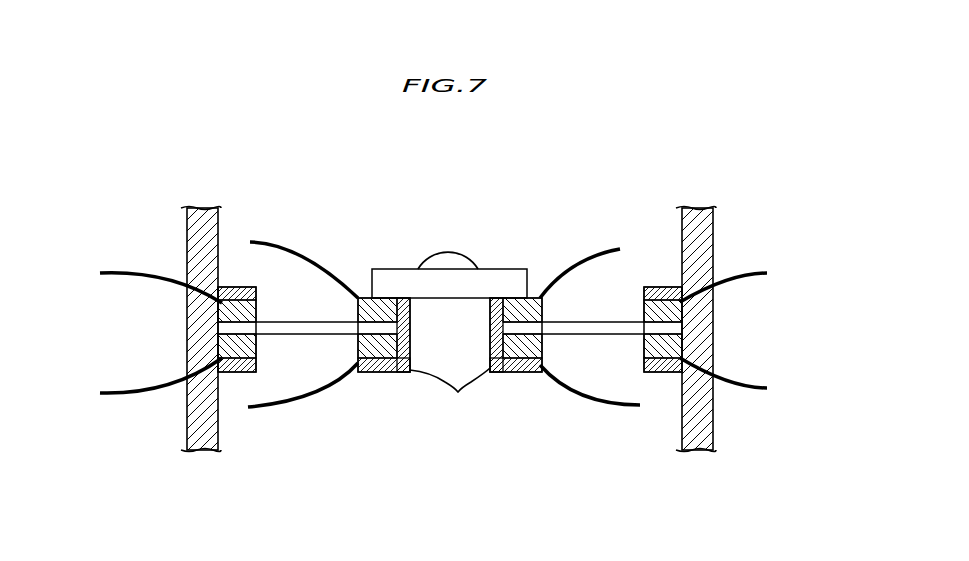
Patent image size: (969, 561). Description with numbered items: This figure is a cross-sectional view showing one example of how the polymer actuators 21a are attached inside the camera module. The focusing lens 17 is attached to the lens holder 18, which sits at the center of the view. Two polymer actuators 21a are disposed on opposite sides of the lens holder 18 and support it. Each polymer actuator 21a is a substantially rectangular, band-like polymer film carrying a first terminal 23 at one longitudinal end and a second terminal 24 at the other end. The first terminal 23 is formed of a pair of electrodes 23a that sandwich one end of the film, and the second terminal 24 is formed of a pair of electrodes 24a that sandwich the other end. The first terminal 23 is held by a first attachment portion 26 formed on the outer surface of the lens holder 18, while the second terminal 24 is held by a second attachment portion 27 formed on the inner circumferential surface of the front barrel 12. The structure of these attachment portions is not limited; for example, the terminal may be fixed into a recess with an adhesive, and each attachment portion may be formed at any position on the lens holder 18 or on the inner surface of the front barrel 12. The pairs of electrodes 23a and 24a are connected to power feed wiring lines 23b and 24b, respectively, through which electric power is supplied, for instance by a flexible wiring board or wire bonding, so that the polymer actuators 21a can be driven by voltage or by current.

The front barrel 12 is at (197, 225).
The focusing lens 17 is at (446, 252).
The lens holder 18 is at (503, 275).
The polymer actuator 21a is at (350, 392).
The first terminal 23 is at (350, 300).
The electrode 23a is at (357, 313).
The power feed wiring line 23b is at (268, 242).
The second terminal 24 is at (265, 316).
The electrode 24a is at (227, 343).
The power feed wiring line 24b is at (118, 272).
The first attachment portion 26 is at (458, 392).
The second attachment portion 27 is at (237, 368).